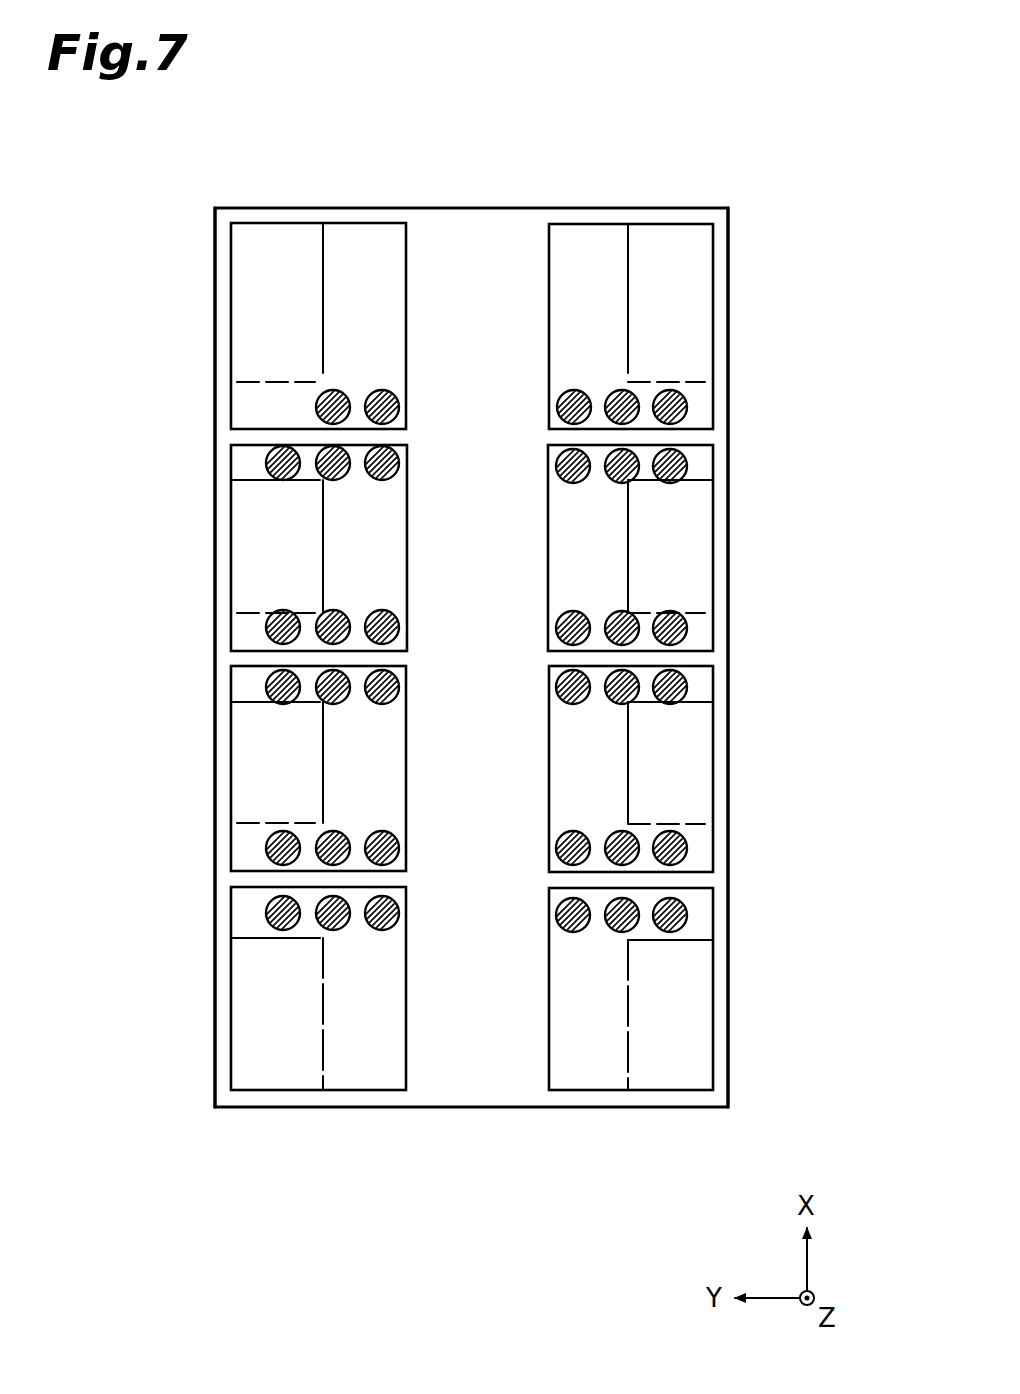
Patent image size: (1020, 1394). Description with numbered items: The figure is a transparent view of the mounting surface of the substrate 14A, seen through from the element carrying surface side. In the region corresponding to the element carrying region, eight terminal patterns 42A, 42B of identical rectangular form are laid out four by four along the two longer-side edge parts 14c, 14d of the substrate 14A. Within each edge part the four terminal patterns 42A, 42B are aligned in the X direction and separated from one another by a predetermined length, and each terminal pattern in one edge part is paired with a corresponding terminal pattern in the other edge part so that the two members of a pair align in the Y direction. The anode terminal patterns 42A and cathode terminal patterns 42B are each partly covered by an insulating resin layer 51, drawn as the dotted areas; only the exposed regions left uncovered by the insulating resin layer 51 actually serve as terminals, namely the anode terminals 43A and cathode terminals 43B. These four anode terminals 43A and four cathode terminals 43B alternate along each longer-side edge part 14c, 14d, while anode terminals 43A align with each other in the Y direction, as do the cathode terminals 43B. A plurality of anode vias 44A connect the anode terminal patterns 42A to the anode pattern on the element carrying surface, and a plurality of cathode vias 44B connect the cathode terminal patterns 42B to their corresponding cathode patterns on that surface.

The substrate 14A is at (778, 213).
The longer-side edge part 14c is at (729, 1070).
The longer-side edge part 14d is at (214, 1070).
The anode terminal pattern 42A is at (229, 253).
The cathode terminal pattern 42B is at (229, 489).
The anode terminal 43A is at (241, 310).
The cathode terminal 43B is at (241, 543).
The anode via 44A is at (580, 398).
The cathode via 44B is at (385, 480).
The insulating resin layer 51 is at (553, 508).